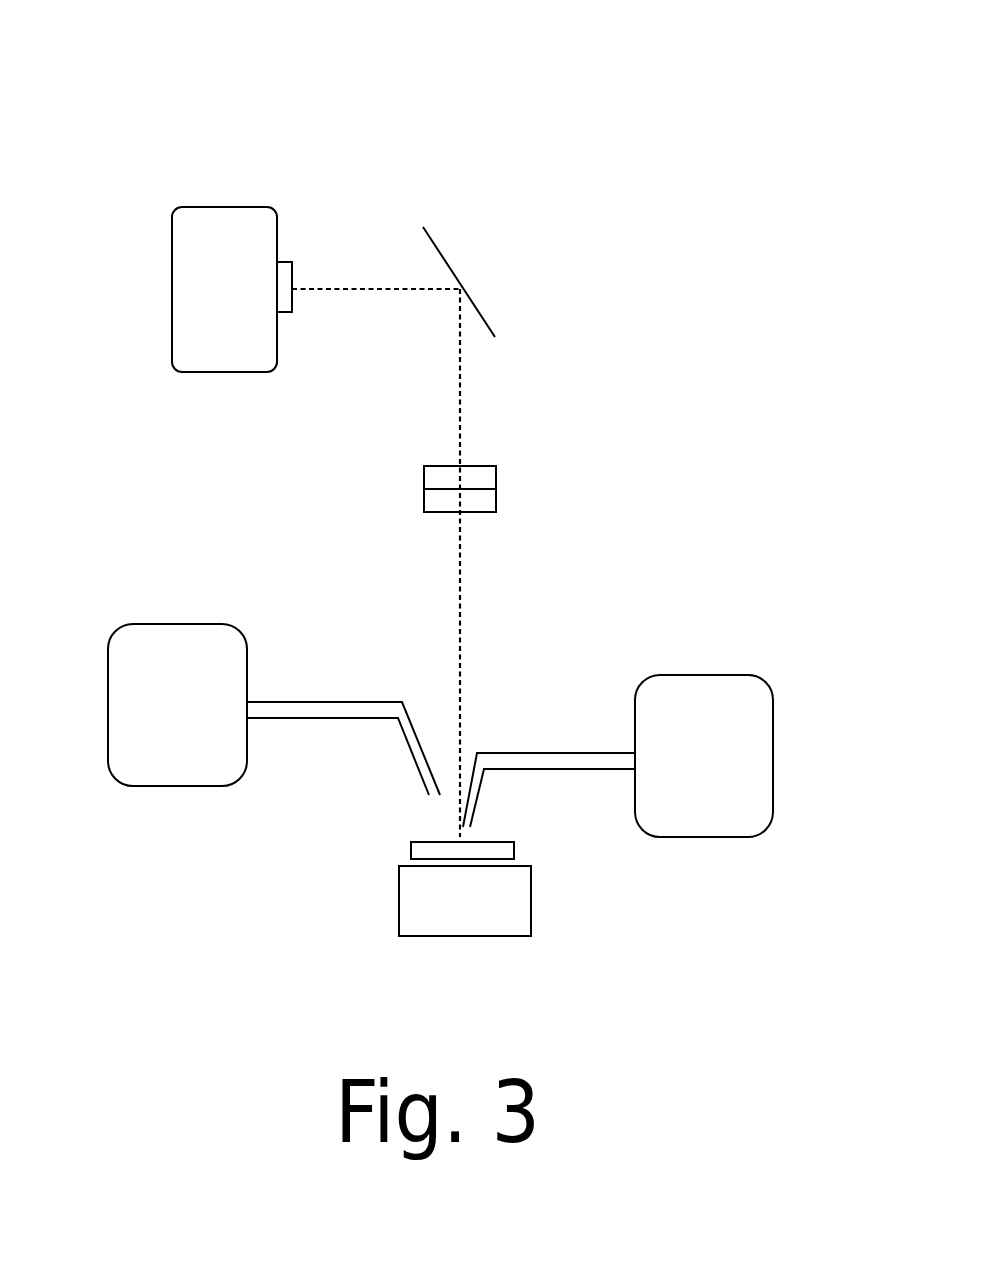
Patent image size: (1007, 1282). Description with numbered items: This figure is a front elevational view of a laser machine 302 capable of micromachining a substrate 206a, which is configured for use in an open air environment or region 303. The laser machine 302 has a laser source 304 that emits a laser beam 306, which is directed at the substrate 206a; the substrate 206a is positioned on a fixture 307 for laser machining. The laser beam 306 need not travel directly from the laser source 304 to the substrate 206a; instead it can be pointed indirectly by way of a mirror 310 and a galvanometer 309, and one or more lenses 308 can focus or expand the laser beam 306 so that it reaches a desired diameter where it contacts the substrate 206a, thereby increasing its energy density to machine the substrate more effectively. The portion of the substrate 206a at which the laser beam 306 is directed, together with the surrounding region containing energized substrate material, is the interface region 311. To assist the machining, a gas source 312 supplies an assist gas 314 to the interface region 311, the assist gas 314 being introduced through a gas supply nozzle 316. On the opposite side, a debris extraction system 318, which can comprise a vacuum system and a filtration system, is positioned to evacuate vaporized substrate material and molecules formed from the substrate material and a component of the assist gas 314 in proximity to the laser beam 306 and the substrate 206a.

The laser machine 302 is at (480, 80).
The open air environment or region 303 is at (98, 483).
The laser source 304 is at (252, 305).
The laser beam 306 is at (462, 648).
The fixture 307 is at (490, 916).
The lens 308 is at (496, 499).
The galvanometer 309 is at (496, 466).
The mirror 310 is at (442, 253).
The interface region 311 is at (440, 824).
The gas source 312 is at (770, 682).
The assist gas 314 is at (732, 771).
The gas supply nozzle 316 is at (484, 775).
The debris extraction system 318 is at (205, 720).
The substrate 206a is at (412, 848).